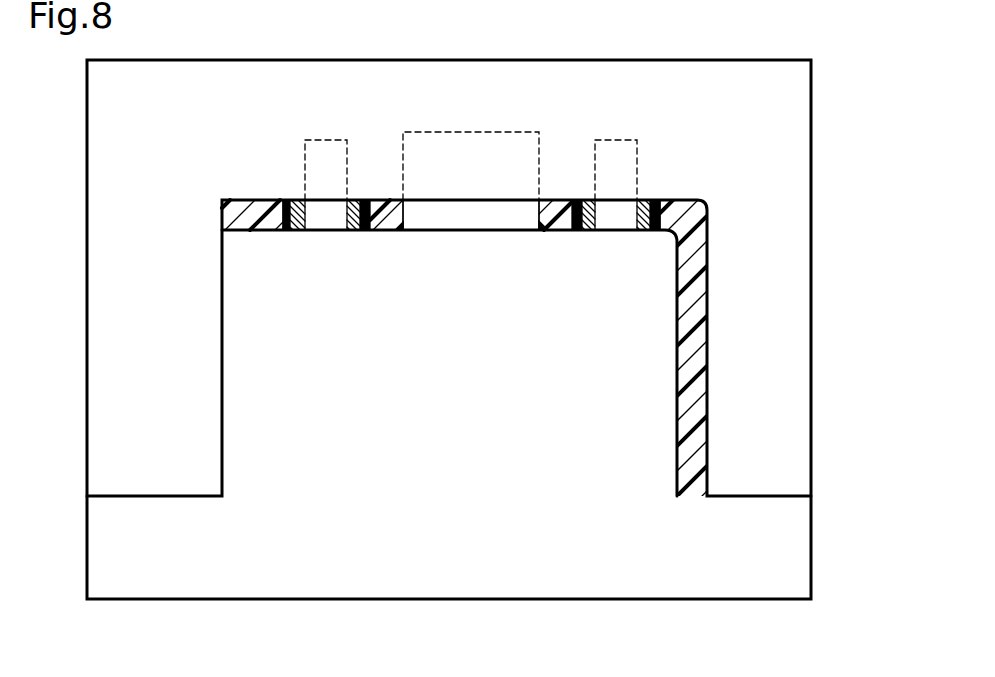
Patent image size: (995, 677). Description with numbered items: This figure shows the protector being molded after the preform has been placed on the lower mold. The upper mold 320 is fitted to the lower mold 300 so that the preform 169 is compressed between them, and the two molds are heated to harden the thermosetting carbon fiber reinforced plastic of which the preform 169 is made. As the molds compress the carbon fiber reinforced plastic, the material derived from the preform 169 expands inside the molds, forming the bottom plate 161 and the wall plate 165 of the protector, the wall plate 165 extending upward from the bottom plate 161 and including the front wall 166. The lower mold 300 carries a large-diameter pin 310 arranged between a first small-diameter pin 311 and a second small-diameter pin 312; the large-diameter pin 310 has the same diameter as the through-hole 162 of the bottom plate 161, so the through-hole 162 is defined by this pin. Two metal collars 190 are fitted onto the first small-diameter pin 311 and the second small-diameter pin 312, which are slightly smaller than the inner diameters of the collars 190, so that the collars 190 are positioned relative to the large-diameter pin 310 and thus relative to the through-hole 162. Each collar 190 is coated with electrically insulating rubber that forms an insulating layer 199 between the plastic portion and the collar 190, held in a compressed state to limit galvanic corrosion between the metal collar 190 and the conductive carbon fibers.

The lower mold 300 is at (213, 592).
The upper mold 320 is at (803, 295).
The large-diameter pin 310 is at (480, 132).
The first small-diameter pin 311 is at (635, 165).
The second small-diameter pin 312 is at (305, 160).
The bottom plate 161 is at (248, 222).
The through-hole 162 is at (538, 215).
The wall plate 165 is at (702, 430).
The front wall 166 is at (708, 347).
The preform 169 is at (707, 200).
The collar 190 is at (357, 230).
The insulating layer 199 is at (375, 218).